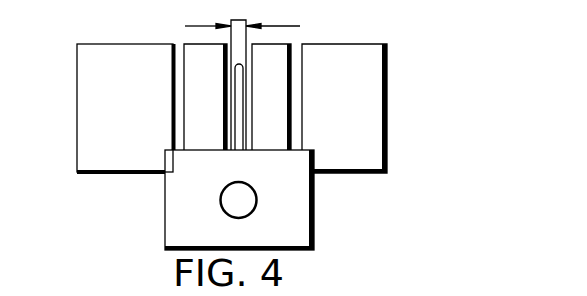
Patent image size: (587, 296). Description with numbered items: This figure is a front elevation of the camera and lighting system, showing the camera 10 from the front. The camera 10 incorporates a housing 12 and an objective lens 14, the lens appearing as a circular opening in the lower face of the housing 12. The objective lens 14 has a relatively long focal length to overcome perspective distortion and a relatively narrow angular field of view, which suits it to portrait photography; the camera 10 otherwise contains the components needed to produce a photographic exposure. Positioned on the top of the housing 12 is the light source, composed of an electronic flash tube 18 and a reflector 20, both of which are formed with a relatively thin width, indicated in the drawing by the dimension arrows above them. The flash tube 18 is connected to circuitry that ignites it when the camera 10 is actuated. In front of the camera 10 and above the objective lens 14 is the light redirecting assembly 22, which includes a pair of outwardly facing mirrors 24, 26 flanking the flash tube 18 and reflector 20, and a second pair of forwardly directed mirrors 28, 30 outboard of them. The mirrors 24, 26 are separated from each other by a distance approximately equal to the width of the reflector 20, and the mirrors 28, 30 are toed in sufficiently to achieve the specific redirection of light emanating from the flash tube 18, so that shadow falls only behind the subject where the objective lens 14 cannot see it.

The camera 10 is at (264, 130).
The housing 12 is at (307, 233).
The objective lens 14 is at (253, 197).
The electronic flash tube 18 is at (241, 150).
The reflector 20 is at (238, 70).
The light redirecting assembly 22 is at (264, 95).
The outwardly facing mirror 24 is at (278, 48).
The outwardly facing mirror 26 is at (195, 50).
The forwardly directed mirror 28 is at (353, 56).
The forwardly directed mirror 30 is at (125, 58).